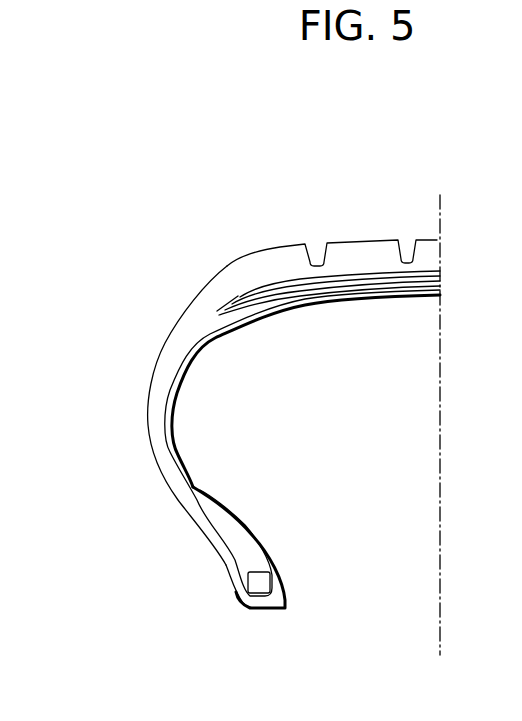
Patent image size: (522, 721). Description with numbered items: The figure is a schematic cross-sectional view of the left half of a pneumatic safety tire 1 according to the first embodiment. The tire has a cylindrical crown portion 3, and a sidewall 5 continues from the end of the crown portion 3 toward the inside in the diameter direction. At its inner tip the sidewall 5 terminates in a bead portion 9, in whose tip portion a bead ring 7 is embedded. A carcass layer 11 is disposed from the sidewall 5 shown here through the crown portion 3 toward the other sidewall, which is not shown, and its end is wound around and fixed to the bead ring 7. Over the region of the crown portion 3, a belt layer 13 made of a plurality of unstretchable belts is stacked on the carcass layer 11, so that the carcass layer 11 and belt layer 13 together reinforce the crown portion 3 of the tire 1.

The pneumatic safety tire 1 is at (398, 208).
The crown portion 3 is at (349, 265).
The sidewall 5 is at (140, 417).
The bead ring 7 is at (258, 582).
The bead portion 9 is at (210, 558).
The carcass layer 11 is at (178, 462).
The belt layer 13 is at (283, 294).